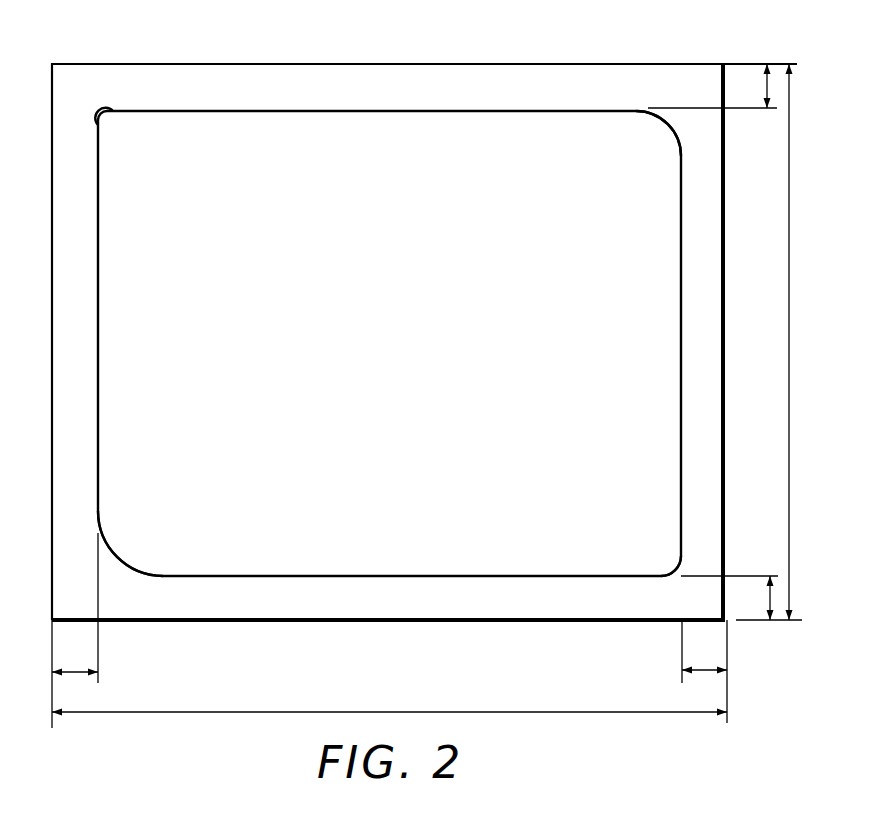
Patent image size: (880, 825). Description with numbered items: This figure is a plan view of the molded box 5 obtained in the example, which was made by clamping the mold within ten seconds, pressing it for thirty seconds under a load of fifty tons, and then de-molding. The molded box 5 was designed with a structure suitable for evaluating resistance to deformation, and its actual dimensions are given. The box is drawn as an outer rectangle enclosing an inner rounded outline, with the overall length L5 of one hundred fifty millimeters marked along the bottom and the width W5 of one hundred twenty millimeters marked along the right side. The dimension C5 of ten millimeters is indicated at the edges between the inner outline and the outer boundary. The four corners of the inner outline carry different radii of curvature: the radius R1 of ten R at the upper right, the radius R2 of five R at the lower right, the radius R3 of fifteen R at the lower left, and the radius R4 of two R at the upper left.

The molded box 5 is at (500, 127).
The radius of curvature R1 is at (651, 124).
The radius of curvature R2 is at (668, 562).
The radius of curvature R3 is at (127, 546).
The radius of curvature R4 is at (104, 124).
The dimension C5 is at (415, 396).
The width W5 is at (808, 342).
The length L5 is at (389, 700).